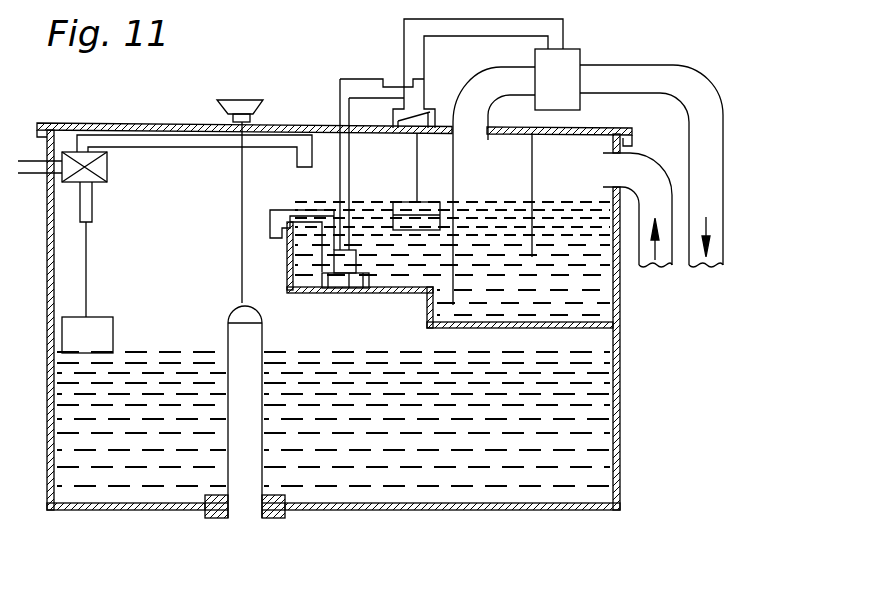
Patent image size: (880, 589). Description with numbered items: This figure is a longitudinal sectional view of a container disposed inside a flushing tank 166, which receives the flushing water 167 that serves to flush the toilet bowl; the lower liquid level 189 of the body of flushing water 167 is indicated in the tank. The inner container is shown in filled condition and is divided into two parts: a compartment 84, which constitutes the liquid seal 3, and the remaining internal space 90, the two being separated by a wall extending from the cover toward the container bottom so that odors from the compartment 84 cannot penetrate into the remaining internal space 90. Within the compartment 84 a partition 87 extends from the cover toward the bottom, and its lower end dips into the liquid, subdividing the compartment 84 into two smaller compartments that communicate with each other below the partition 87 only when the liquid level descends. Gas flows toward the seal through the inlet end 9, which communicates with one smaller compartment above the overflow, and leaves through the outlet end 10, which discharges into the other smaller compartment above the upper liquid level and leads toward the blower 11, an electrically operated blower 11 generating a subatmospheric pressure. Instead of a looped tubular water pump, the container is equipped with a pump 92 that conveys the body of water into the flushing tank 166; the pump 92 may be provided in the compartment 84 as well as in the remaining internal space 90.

The liquid seal 3 is at (602, 287).
The inlet end 9 is at (612, 176).
The outlet end 10 is at (472, 113).
The blower 11 is at (563, 73).
The compartment 84 is at (507, 184).
The partition 87 is at (532, 223).
The remaining internal space 90 is at (365, 155).
The pump 92 is at (340, 275).
The flushing tank 166 is at (620, 352).
The flushing water 167 is at (593, 445).
The lower liquid level 189 is at (173, 350).